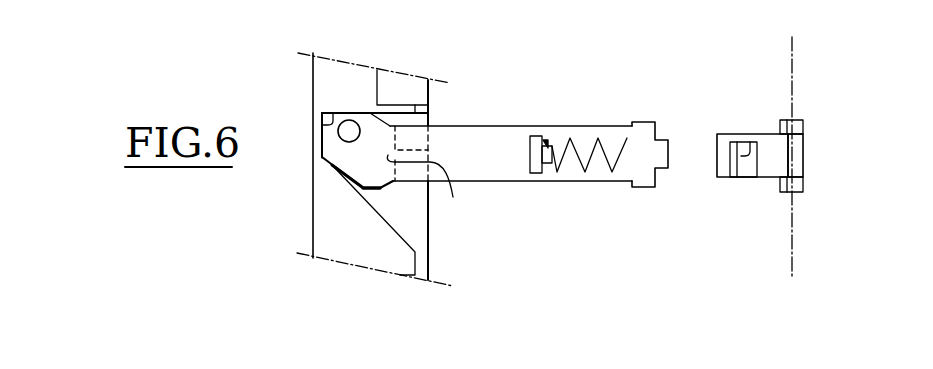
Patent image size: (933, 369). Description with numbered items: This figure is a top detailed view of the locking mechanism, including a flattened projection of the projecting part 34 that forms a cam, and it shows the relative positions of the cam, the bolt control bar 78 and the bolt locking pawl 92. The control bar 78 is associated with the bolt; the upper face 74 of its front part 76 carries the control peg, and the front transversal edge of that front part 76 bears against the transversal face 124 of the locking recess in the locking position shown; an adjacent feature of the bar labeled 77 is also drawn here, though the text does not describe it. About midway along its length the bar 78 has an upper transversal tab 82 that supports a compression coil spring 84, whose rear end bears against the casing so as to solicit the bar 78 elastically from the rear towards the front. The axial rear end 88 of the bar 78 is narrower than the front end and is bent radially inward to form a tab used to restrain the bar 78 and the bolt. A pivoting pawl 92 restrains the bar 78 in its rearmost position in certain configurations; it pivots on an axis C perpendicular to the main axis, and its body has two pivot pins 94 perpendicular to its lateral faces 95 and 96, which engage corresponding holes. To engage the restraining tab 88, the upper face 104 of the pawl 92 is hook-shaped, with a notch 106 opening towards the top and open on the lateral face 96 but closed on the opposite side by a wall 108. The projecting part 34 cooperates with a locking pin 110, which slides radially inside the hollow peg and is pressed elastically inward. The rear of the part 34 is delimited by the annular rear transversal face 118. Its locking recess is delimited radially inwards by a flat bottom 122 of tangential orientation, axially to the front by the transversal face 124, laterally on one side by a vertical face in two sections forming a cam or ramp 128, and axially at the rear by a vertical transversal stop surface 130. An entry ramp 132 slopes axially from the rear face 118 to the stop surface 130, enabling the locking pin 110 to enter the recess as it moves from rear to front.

The projecting part 34 is at (310, 232).
The upper face 74 is at (495, 142).
The front part 76 is at (322, 154).
The upper edge of latch body 77 is at (322, 133).
The control bar 78 is at (573, 113).
The upper transversal tab 82 is at (532, 160).
The compression coil spring 84 is at (575, 170).
The axial rear end 88 is at (669, 139).
The pivoting pawl 92 is at (778, 167).
The pivot pins 94 is at (802, 118).
The lateral face 95 is at (743, 134).
The lateral face 96 is at (767, 178).
The upper face 104 is at (777, 148).
The notch 106 is at (750, 163).
The wall 108 is at (717, 160).
The locking pin 110 is at (351, 114).
The annular rear transversal face 118 is at (427, 253).
The flat bottom 122 is at (352, 182).
The transversal face 124 is at (335, 113).
The cam or ramp 128 is at (395, 212).
The vertical transversal stop surface 130 is at (441, 193).
The entry ramp 132 is at (428, 119).
The axis C is at (793, 257).